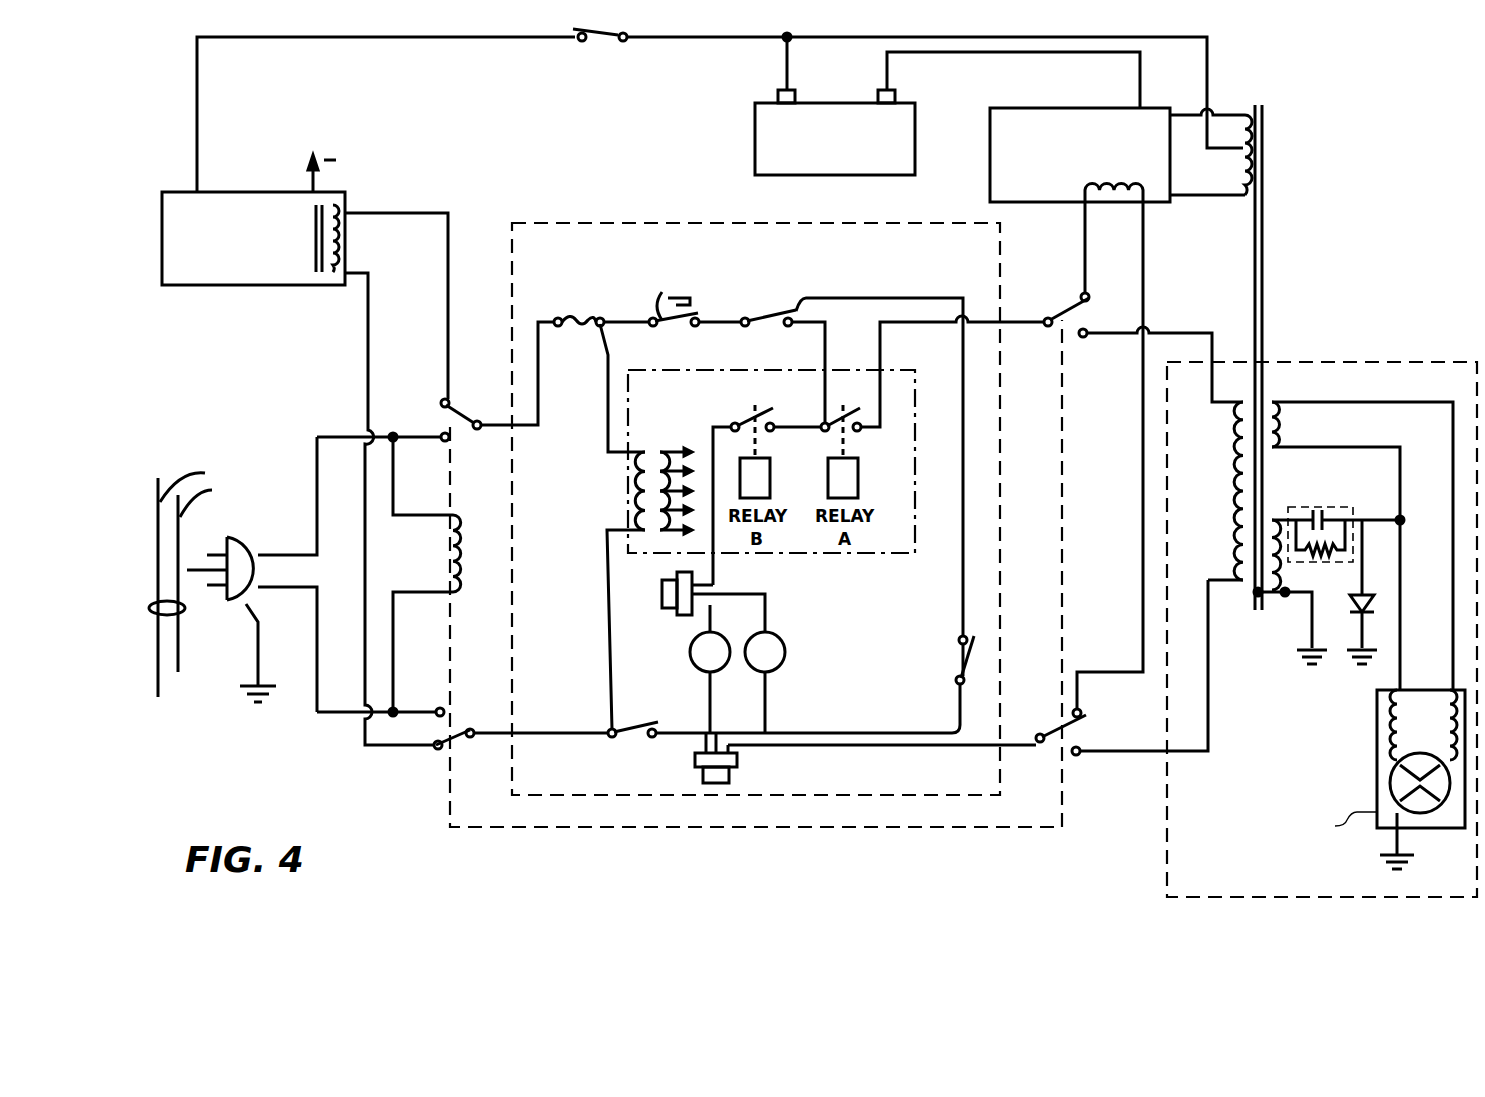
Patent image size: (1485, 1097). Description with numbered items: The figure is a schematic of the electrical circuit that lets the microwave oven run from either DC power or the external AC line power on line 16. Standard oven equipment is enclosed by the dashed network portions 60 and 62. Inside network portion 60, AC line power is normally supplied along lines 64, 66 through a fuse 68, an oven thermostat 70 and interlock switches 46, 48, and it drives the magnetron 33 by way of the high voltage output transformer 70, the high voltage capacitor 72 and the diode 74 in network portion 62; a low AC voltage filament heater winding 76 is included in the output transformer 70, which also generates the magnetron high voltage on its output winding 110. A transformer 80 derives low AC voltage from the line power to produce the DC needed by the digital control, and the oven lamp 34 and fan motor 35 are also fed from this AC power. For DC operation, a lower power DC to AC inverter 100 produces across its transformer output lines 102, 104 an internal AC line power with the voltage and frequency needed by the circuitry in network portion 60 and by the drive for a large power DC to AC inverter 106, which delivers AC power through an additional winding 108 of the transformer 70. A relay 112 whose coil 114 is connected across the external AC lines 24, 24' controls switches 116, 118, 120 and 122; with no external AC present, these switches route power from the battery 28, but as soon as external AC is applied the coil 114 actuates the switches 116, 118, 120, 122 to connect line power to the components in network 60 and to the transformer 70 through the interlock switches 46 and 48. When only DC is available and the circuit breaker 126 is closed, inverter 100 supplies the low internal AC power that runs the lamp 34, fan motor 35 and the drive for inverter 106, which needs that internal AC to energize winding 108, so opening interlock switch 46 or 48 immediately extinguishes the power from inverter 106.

The circuit breaker 126 is at (602, 42).
The battery 28 is at (754, 137).
The large power DC to AC inverter 106 is at (1105, 108).
The additional winding of transformer 108 is at (1242, 181).
The lower power DC to AC inverter 100 is at (264, 192).
The transformer output line 102 is at (388, 214).
The transformer output line 104 is at (353, 276).
The high voltage output transformer 70 is at (694, 304).
The fuse 68 is at (582, 330).
The interlock switch 46 is at (778, 312).
The switch 120 is at (1052, 330).
The switch 116 is at (442, 420).
The line 64 is at (528, 428).
The transformer 80 is at (650, 452).
The external AC line 24 is at (252, 574).
The relay 112 is at (462, 560).
The coil 114 is at (450, 594).
The external AC line 24' is at (276, 650).
The line 16 is at (170, 615).
The switch 118 is at (430, 747).
The line 66 is at (536, 730).
The interlock switch 48 is at (648, 724).
The oven lamp 34 is at (698, 670).
The fan motor 35 is at (779, 668).
The network portion 60 is at (778, 797).
The switch 122 is at (1058, 752).
The output winding 110 is at (1243, 556).
The low AC voltage filament heater winding 76 is at (1302, 436).
The high voltage capacitor 72 is at (1380, 522).
The diode 74 is at (1372, 608).
The magnetron 33 is at (1376, 784).
The network portion 62 is at (1162, 863).